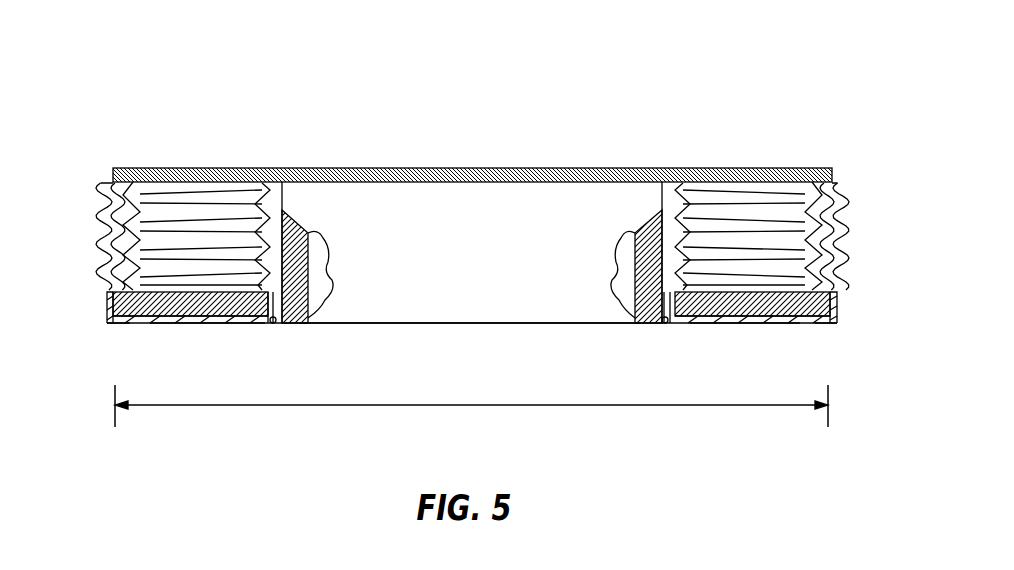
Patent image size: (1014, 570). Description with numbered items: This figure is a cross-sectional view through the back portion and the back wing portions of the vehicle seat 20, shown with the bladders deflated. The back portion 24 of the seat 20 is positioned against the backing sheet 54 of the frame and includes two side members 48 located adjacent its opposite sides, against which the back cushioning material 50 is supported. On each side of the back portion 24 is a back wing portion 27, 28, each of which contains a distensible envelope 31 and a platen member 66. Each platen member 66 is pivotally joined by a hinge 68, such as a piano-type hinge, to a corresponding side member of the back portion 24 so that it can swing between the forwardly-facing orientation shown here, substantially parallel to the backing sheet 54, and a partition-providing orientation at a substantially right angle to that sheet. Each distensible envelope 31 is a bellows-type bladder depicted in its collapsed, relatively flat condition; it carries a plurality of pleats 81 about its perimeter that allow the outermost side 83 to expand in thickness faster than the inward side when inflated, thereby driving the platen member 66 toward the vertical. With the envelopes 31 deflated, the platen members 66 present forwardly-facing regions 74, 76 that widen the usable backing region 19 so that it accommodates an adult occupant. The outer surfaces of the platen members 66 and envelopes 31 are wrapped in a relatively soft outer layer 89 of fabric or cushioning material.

The backing region 19 is at (250, 408).
The vehicle seat 20 is at (790, 70).
The back portion 24 is at (480, 324).
The back wing portion 27 is at (108, 308).
The back wing portion 28 is at (838, 312).
The distensible envelope 31 is at (118, 228).
The side member 48 is at (328, 250).
The cushioning material 50 is at (397, 324).
The backing sheet 54 is at (224, 167).
The platen member 66 is at (162, 323).
The hinge 68 is at (277, 324).
The forwardly-facing region 74 is at (184, 322).
The forwardly-facing region 76 is at (712, 324).
The pleats 81 is at (108, 268).
The outermost side 83 is at (125, 200).
The soft outer layer 89 is at (122, 326).